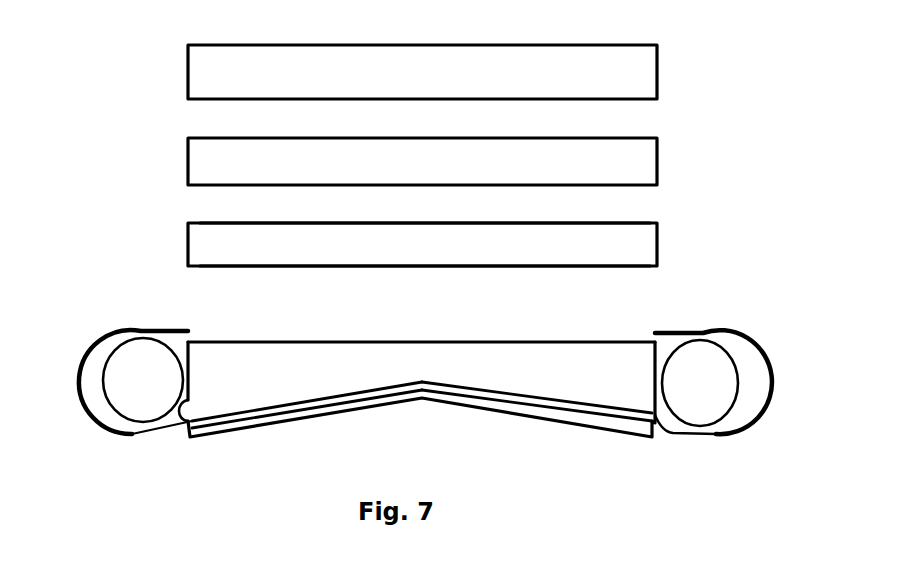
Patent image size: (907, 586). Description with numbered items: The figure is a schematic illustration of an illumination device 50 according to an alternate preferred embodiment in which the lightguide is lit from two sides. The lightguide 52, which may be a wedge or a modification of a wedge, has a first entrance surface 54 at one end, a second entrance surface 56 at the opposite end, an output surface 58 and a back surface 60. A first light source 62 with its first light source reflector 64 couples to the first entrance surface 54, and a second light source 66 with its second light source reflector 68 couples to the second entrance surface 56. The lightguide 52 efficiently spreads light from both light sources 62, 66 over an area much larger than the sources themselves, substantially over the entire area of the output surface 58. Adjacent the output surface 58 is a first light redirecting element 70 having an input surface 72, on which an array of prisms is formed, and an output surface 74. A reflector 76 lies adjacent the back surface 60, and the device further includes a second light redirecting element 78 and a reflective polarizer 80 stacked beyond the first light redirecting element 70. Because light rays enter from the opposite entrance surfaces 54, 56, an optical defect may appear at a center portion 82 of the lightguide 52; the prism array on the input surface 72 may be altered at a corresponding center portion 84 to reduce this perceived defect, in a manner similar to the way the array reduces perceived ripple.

The illumination device 50 is at (742, 152).
The lightguide 52 is at (620, 352).
The first entrance surface 54 is at (186, 406).
The second entrance surface 56 is at (670, 428).
The output surface 58 is at (283, 340).
The back surface 60 is at (305, 410).
The first light source 62 is at (147, 410).
The first light source reflector 64 is at (97, 412).
The second light source 66 is at (717, 423).
The second light source reflector 68 is at (748, 366).
The first light redirecting element 70 is at (640, 247).
The input surface 72 is at (628, 266).
The output surface 74 is at (625, 223).
The reflector 76 is at (510, 415).
The second light redirecting element 78 is at (640, 162).
The reflective polarizer 80 is at (640, 72).
The center portion 82 is at (418, 341).
The center portion 84 is at (506, 266).